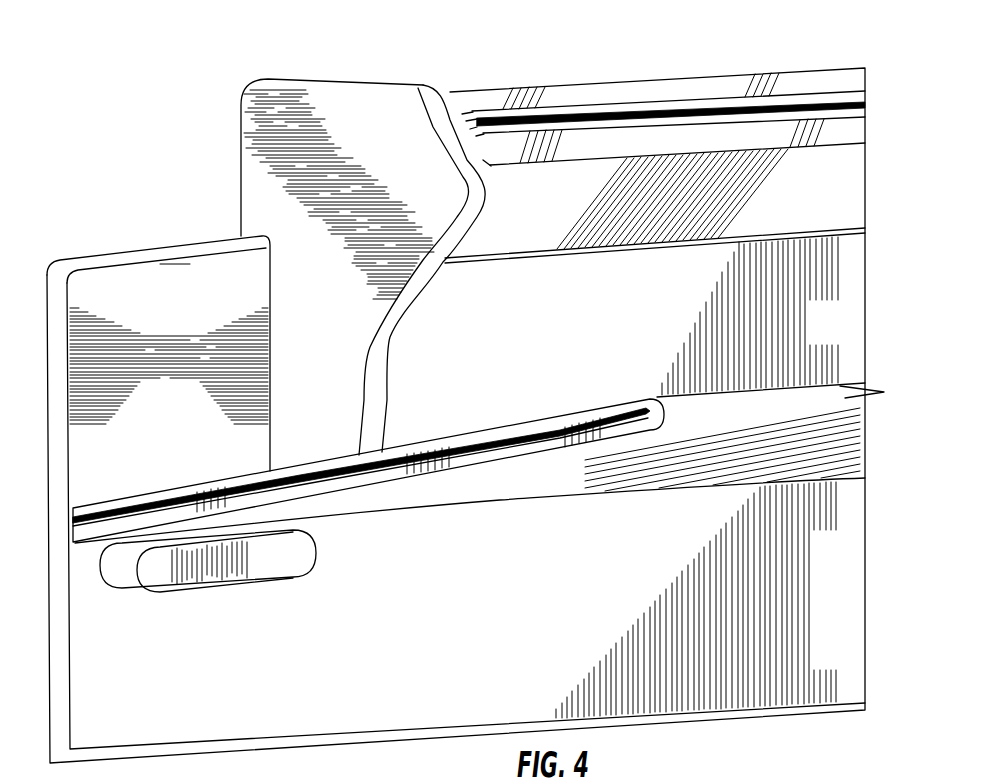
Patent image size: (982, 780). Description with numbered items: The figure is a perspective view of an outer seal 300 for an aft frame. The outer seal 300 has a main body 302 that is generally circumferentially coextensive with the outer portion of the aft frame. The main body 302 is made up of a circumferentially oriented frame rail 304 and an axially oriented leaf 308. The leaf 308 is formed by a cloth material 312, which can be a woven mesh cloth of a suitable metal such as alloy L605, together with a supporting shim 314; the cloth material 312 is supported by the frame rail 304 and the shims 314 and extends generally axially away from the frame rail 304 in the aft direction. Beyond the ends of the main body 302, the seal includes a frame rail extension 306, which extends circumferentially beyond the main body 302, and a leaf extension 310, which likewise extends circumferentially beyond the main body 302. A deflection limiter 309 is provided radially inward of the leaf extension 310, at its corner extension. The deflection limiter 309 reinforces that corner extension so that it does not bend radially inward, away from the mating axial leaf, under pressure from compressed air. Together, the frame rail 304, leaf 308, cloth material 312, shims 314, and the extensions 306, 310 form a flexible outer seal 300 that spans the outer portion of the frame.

The outer seal 300 is at (130, 103).
The main body 302 is at (863, 33).
The frame rail 304 is at (847, 301).
The frame rail extension 306 is at (173, 255).
The leaf 308 is at (788, 403).
The deflection limiter 309 is at (283, 565).
The leaf extension 310 is at (848, 454).
The cloth material 312 is at (560, 420).
The shim 314 is at (490, 445).